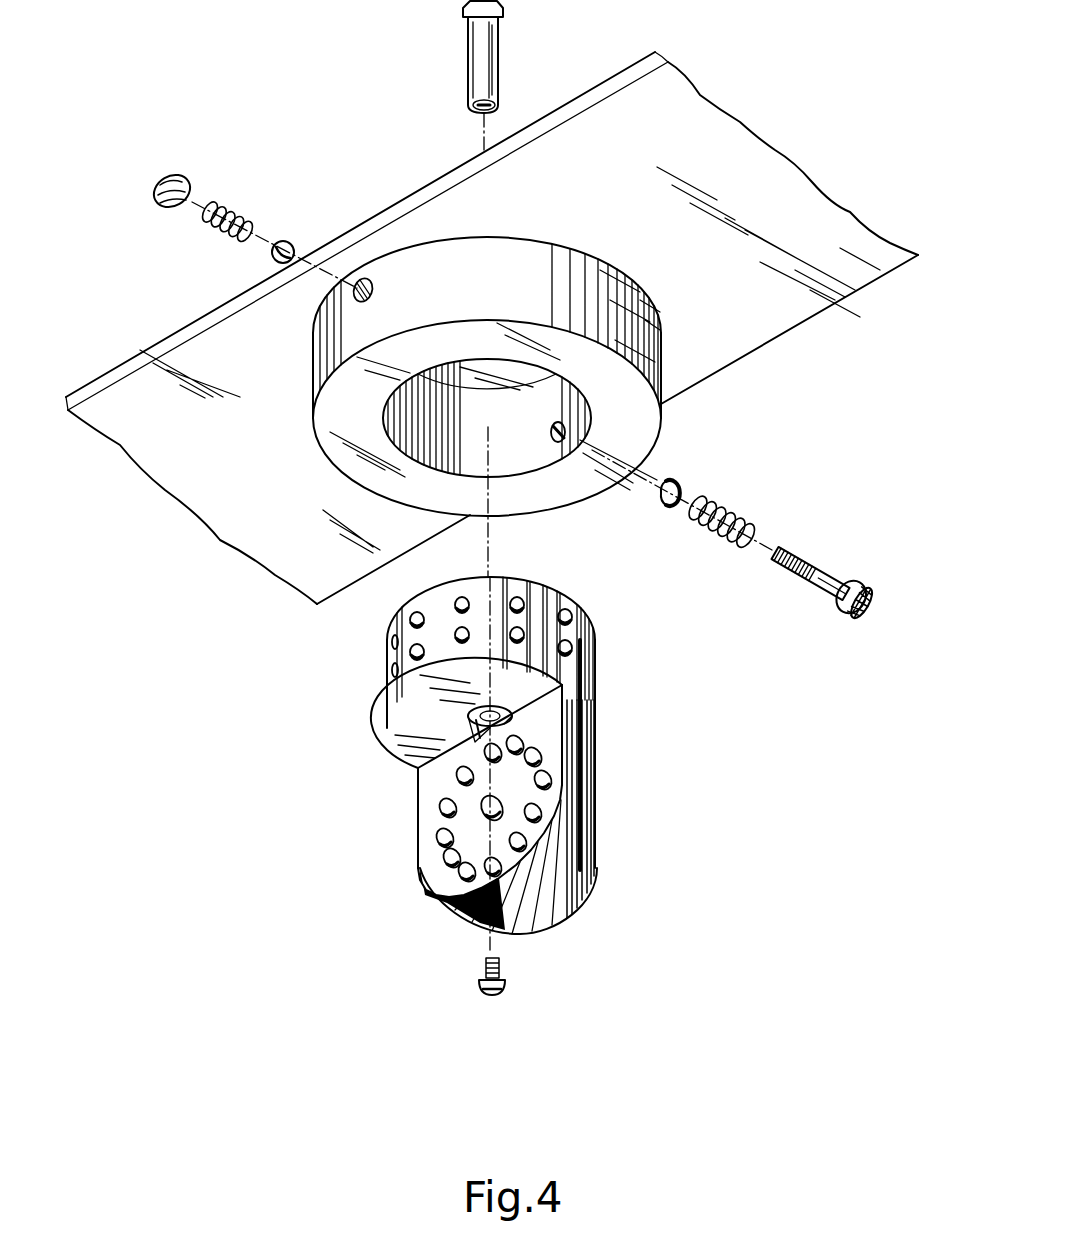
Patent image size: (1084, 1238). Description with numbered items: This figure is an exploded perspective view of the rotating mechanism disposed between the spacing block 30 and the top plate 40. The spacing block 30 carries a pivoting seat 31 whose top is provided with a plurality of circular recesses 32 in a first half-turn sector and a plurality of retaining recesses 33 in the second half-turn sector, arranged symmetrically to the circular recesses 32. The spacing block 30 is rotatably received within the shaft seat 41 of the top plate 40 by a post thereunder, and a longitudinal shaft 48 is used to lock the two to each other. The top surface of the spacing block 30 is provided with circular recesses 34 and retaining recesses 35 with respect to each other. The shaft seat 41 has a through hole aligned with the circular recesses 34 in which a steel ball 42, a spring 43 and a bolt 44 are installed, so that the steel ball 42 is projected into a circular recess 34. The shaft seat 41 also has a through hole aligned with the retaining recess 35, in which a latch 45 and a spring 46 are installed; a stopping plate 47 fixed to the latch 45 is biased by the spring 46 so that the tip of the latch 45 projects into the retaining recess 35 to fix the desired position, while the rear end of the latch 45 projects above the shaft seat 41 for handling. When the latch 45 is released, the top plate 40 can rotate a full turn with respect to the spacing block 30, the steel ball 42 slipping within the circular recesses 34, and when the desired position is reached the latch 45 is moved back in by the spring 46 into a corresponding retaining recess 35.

The spacing block 30 is at (505, 765).
The pivoting seat 31 is at (433, 852).
The circular recesses 32 is at (440, 810).
The retaining recesses 33 is at (543, 807).
The circular recesses 34 is at (567, 615).
The retaining recesses 35 is at (567, 648).
The top plate 40 is at (417, 230).
The shaft seat 41 is at (497, 267).
The steel ball 42 is at (290, 247).
The spring 43 is at (233, 213).
The bolt 44 is at (185, 177).
The latch 45 is at (830, 580).
The spring 46 is at (740, 520).
The stopping plate 47 is at (683, 483).
The longitudinal shaft 48 is at (480, 58).